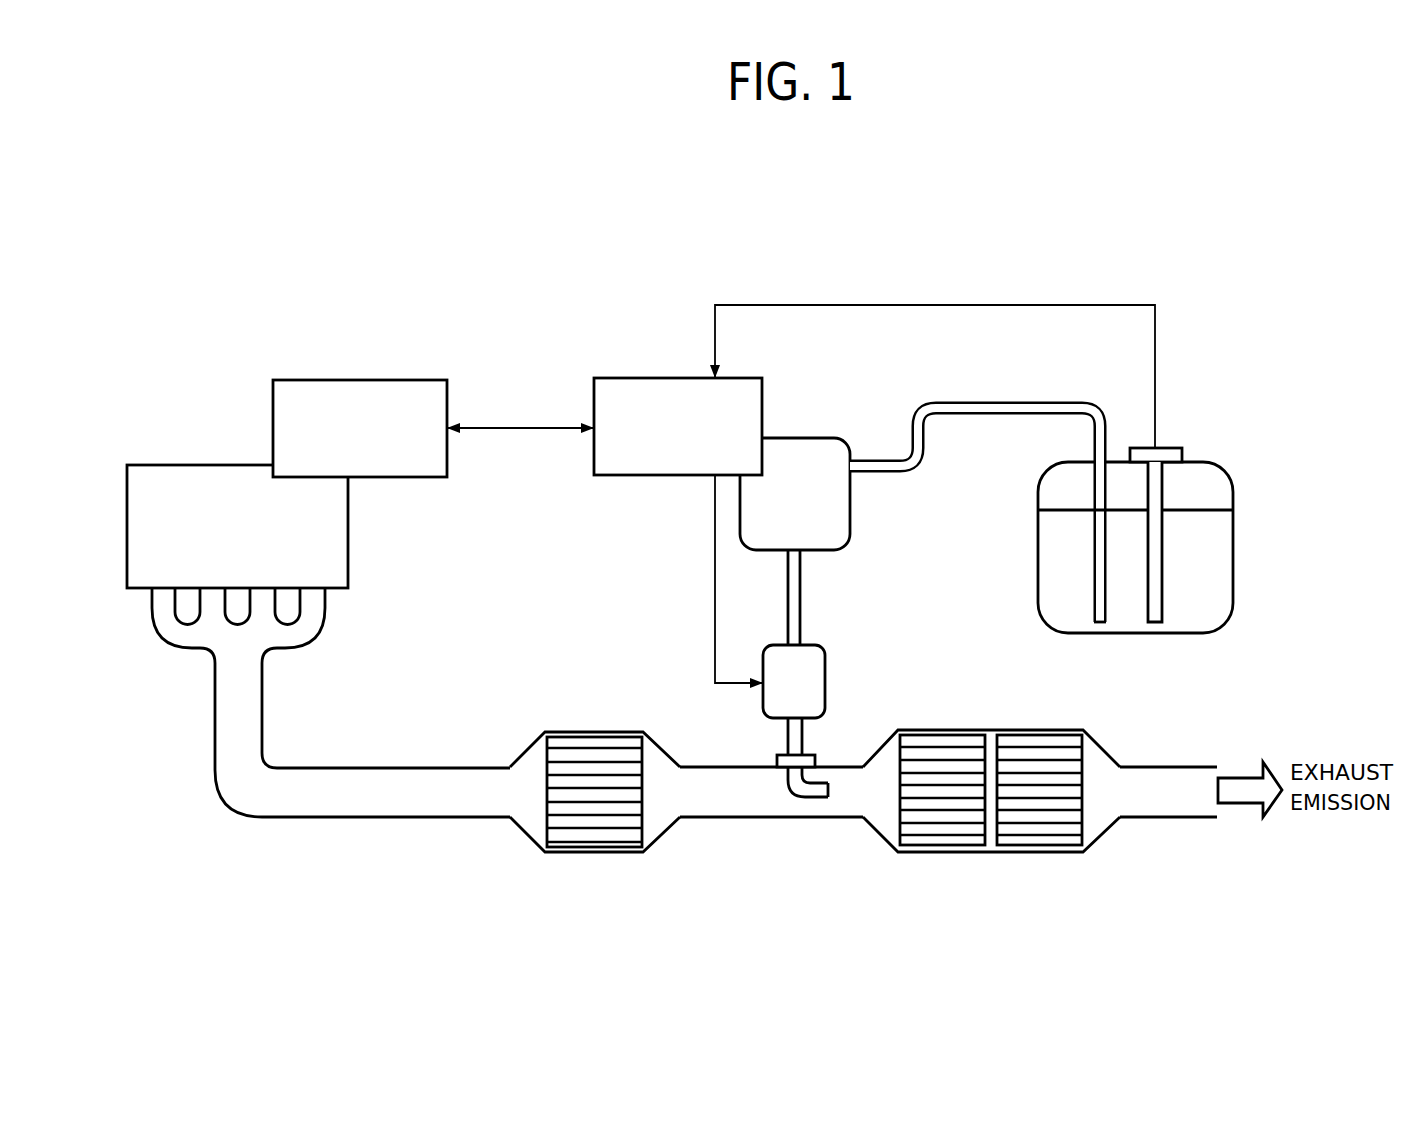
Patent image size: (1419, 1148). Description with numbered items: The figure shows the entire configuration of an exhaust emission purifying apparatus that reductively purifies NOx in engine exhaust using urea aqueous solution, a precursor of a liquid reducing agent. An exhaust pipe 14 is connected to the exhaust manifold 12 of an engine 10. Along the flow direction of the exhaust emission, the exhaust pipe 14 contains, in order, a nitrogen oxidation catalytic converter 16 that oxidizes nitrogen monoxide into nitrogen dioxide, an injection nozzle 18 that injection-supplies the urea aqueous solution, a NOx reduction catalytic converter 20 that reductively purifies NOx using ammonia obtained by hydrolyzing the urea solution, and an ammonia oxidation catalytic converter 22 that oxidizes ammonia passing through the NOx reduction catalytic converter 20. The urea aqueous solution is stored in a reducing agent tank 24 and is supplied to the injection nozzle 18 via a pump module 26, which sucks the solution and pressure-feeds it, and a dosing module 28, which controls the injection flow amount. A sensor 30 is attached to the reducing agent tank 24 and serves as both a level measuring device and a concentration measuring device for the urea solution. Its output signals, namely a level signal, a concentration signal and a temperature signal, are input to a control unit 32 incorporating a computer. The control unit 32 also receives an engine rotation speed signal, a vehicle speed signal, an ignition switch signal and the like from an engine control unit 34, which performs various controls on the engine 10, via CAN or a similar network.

The engine 10 is at (170, 465).
The exhaust manifold 12 is at (320, 603).
The exhaust pipe 14 is at (366, 768).
The nitrogen oxidation catalytic converter 16 is at (593, 840).
The injection nozzle 18 is at (812, 793).
The NOx reduction catalytic converter 20 is at (947, 840).
The ammonia oxidation catalytic converter 22 is at (1046, 840).
The reducing agent tank 24 is at (1235, 483).
The pump module 26 is at (840, 438).
The dosing module 28 is at (812, 678).
The sensor 30 is at (1163, 448).
The control unit 32 is at (620, 378).
The engine control unit 34 is at (318, 380).